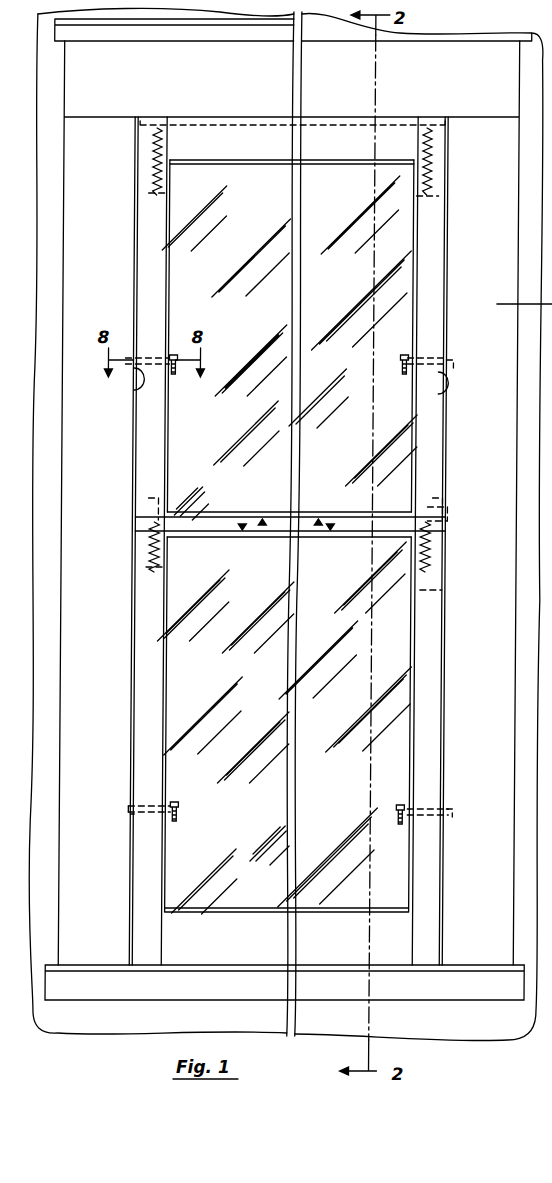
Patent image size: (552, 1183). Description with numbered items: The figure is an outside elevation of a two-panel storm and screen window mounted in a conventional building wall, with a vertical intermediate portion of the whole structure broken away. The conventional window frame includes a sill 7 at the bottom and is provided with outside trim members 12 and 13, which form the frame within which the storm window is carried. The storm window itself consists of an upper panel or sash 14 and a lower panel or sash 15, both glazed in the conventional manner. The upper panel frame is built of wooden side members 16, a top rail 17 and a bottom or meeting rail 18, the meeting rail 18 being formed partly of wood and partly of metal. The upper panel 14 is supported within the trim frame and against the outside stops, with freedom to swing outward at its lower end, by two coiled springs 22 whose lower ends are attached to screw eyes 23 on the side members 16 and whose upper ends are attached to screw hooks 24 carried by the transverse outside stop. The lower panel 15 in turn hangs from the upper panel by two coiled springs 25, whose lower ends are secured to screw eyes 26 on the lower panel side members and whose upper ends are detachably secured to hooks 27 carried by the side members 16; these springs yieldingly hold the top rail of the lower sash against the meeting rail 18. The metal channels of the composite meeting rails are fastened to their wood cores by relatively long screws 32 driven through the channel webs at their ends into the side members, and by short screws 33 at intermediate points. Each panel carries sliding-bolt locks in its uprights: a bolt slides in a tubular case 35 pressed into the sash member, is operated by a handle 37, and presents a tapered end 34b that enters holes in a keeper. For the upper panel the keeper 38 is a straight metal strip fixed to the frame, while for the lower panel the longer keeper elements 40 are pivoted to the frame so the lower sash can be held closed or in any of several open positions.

The sill 7 is at (440, 1000).
The outside trim member 12 is at (77, 293).
The outside trim member 13 is at (462, 57).
The upper panel or sash 14 is at (289, 340).
The lower panel or sash 15 is at (284, 725).
The side member 16 is at (466, 228).
The top rail 17 is at (241, 148).
The bottom or meeting rail 18 is at (234, 512).
The coiled spring 22 is at (446, 174).
The screw eye 23 is at (442, 197).
The screw hook 24 is at (441, 131).
The coiled spring 25 is at (448, 573).
The screw eye 26 is at (447, 593).
The hook 27 is at (442, 501).
The long screw 32 is at (442, 513).
The short screw 33 is at (326, 533).
The tapered end 34b is at (452, 810).
The tubular case 35 is at (445, 806).
The operating handle 37 is at (404, 826).
The keeper 38 is at (447, 384).
The keeper element 40 is at (465, 745).